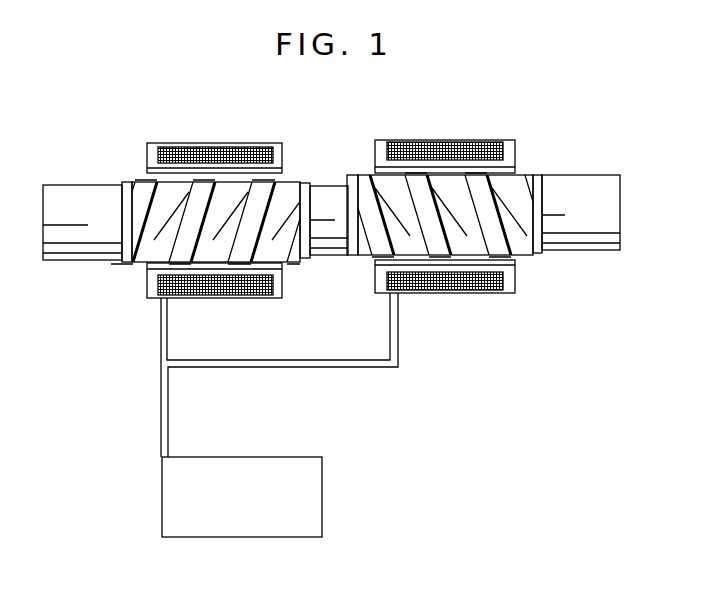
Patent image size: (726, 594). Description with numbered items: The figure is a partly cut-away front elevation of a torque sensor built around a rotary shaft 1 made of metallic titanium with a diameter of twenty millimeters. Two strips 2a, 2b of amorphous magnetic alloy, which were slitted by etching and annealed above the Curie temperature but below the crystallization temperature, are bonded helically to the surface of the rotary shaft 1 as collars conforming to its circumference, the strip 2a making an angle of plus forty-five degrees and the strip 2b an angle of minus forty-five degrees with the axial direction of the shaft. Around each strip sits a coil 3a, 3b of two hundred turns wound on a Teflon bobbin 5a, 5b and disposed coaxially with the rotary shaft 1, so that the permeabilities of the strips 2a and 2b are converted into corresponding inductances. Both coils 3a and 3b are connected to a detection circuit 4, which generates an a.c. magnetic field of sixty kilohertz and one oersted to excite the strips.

The rotary shaft 1 is at (590, 181).
The strip of amorphous magnetic alloy 2a is at (303, 262).
The strip of amorphous magnetic alloy 2b is at (533, 177).
The coil 3a is at (212, 147).
The coil 3b is at (445, 147).
The detection circuit 4 is at (236, 457).
The bobbin 5a is at (148, 280).
The bobbin 5b is at (513, 270).